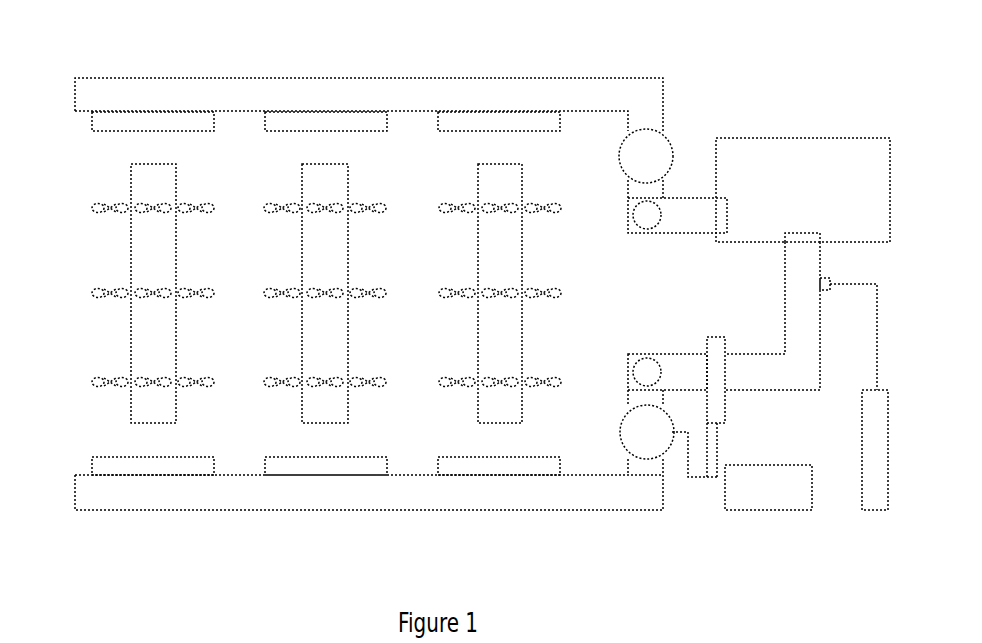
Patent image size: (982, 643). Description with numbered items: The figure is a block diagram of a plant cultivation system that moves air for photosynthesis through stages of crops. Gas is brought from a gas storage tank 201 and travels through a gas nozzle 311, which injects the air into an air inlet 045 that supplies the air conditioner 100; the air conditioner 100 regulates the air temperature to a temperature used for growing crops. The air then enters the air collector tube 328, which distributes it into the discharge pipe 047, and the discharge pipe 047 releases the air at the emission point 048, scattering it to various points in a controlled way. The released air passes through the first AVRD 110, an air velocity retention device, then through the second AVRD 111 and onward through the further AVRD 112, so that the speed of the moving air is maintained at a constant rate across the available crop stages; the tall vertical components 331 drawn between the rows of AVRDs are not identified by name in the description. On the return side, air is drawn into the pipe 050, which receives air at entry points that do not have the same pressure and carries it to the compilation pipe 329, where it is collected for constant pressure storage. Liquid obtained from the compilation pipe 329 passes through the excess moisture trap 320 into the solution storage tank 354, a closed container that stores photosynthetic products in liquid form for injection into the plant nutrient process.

The discharge pipe 047 is at (369, 77).
The emission point 048 is at (406, 267).
The pipe 050 is at (369, 525).
The column housing 331 is at (266, 293).
The first AVRD 110 is at (285, 192).
The second AVRD 111 is at (285, 277).
The AVRD 112 is at (285, 365).
The air collector tube 328 is at (620, 316).
The compilation pipe 329 is at (657, 316).
The air conditioner 100 is at (821, 150).
The air inlet 045 is at (832, 150).
The gas nozzle 311 is at (833, 283).
The gas storage tank 201 is at (896, 407).
The excess moisture trap 320 is at (688, 455).
The solution storage tank 354 is at (795, 519).